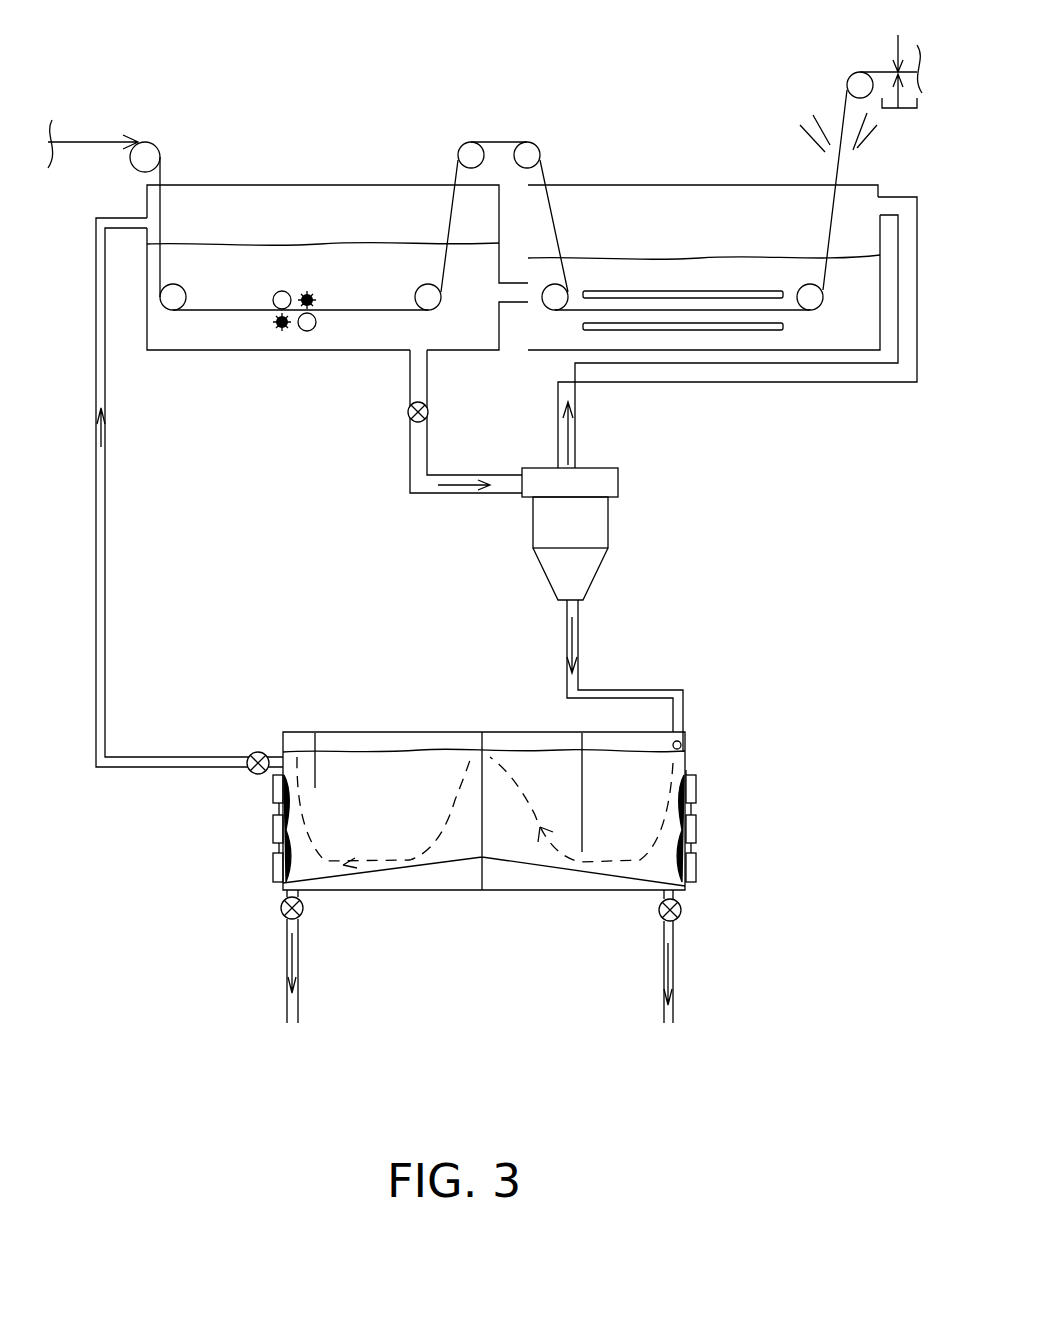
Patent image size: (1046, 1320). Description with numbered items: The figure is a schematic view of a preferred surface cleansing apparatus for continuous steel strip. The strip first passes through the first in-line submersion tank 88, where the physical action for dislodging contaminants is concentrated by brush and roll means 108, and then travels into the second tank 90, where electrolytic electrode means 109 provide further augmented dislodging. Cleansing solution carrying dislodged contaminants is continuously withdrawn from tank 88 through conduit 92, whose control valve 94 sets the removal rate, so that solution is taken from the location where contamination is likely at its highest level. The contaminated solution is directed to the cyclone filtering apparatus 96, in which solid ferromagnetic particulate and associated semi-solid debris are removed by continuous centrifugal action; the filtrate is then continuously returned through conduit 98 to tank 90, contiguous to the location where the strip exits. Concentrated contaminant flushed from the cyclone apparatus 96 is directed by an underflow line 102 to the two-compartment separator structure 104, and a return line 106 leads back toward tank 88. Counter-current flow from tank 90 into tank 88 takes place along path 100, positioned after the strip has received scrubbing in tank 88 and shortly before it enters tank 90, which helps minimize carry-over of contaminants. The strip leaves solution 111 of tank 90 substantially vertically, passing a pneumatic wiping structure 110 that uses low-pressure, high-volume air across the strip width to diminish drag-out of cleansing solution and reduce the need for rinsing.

The tank 88 is at (322, 153).
The tank 90 is at (696, 157).
The conduit 92 is at (408, 448).
The control valve 94 is at (428, 412).
The cyclone filtering apparatus 96 is at (609, 532).
The conduit 98 is at (720, 385).
The path 100 is at (510, 303).
The underflow pipe 102 is at (579, 643).
The separator structure 104 is at (421, 710).
The recirculation pipe 106 is at (106, 639).
The brush and roll means 108 is at (279, 348).
The electrolytic electrode means 109 is at (658, 272).
The pneumatic wiping structure 110 is at (811, 101).
The solution 111 is at (867, 342).